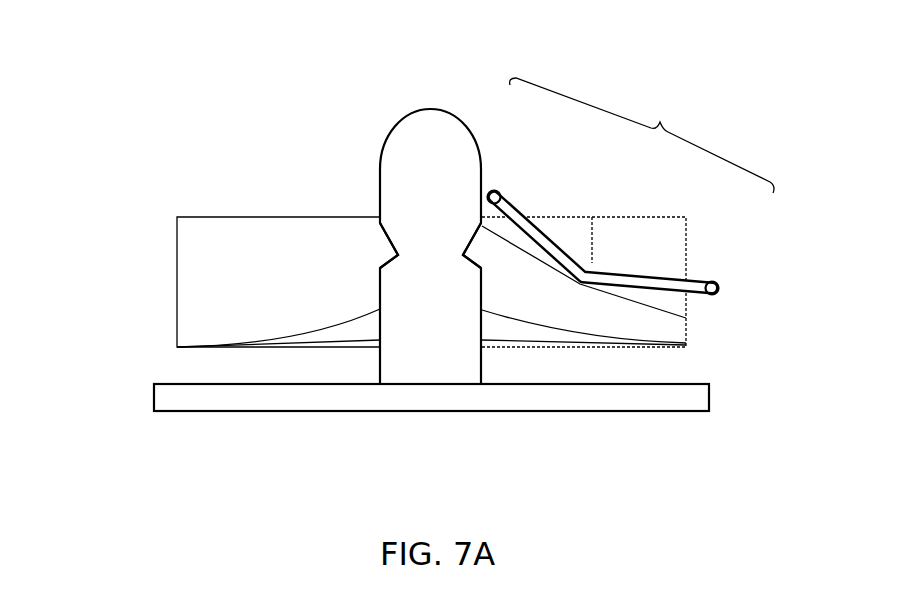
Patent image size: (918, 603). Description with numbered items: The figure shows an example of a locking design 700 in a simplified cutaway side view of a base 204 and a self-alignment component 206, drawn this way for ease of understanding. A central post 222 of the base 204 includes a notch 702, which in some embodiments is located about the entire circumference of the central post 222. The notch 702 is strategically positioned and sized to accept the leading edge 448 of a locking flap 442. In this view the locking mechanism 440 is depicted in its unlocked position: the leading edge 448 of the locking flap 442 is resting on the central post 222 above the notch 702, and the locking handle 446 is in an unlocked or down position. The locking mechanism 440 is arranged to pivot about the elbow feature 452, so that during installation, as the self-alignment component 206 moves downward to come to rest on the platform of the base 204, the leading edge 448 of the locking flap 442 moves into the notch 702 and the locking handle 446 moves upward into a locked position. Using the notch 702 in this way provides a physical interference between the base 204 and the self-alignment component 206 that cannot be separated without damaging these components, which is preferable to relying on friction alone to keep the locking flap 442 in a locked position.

The locking design 700 is at (690, 58).
The base 204 is at (154, 396).
The self-alignment component 206 is at (176, 282).
The central post 222 is at (452, 350).
The locking mechanism 440 is at (641, 191).
The locking flap 442 is at (513, 212).
The locking handle 446 is at (716, 288).
The leading edge 448 is at (490, 187).
The elbow feature 452 is at (592, 248).
The notch 702 is at (370, 252).